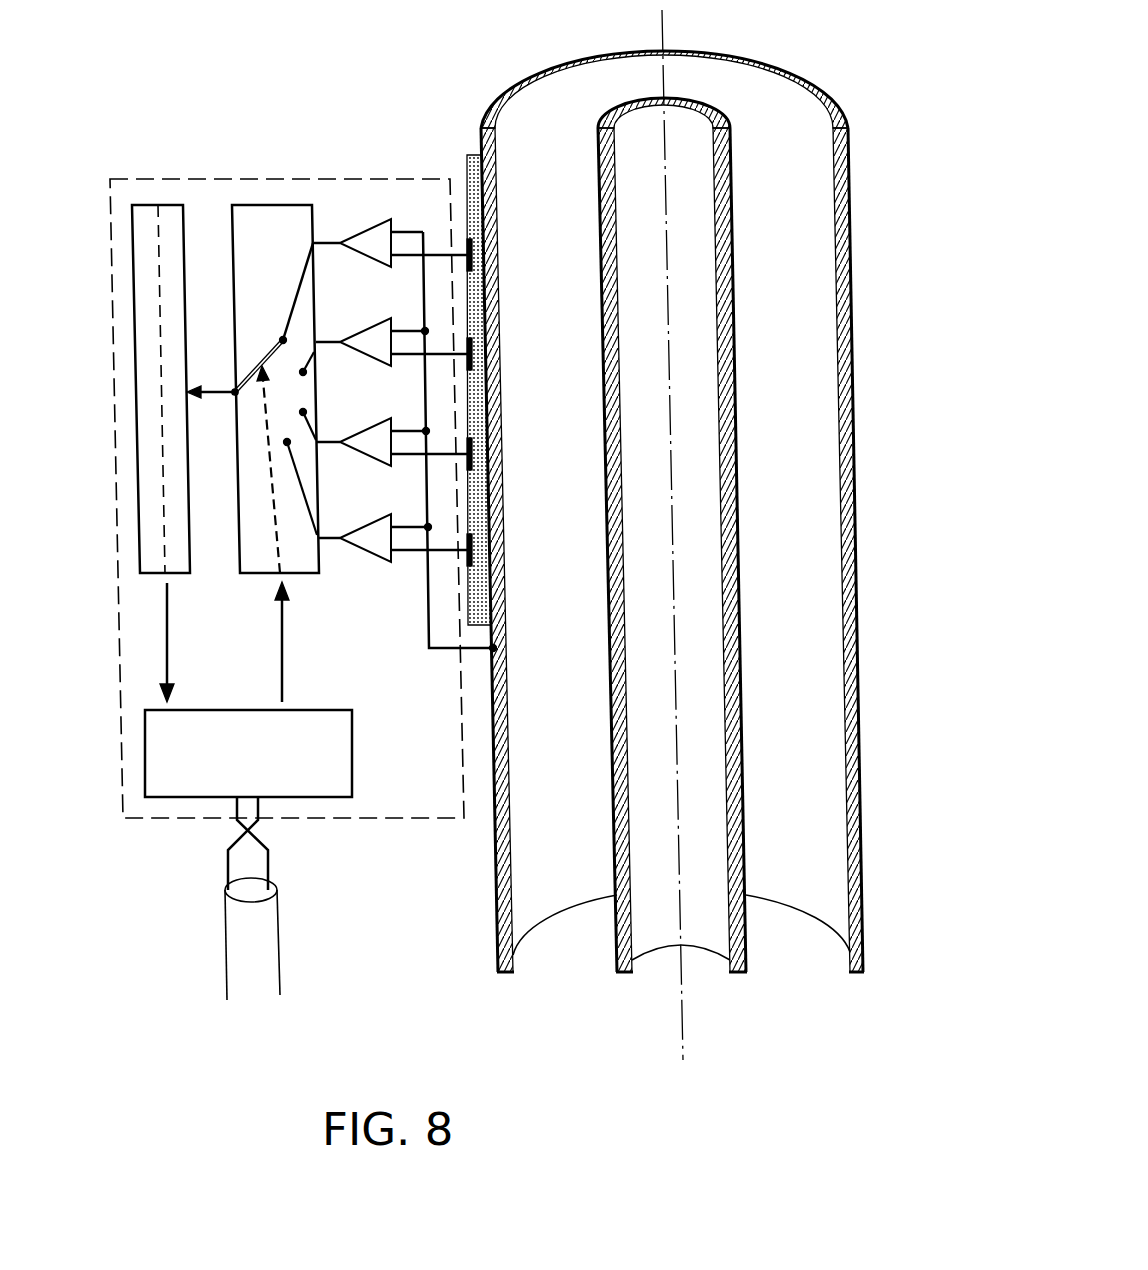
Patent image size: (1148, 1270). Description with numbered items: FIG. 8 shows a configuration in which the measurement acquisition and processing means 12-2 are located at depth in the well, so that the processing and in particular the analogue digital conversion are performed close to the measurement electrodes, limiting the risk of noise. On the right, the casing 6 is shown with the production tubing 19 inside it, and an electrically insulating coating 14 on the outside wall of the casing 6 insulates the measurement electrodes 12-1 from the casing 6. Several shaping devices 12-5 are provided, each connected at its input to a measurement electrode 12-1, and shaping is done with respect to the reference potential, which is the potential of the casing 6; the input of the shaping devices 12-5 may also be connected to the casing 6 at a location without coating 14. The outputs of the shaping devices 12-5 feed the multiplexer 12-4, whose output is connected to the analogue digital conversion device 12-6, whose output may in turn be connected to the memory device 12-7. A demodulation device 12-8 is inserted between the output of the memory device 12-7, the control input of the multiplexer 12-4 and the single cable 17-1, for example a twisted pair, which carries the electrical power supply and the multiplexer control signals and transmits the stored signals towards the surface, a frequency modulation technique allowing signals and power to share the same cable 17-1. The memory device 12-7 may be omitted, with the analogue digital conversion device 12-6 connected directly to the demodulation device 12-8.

The casing 6 is at (818, 83).
The production tubing 19 is at (627, 100).
The electrically insulating coating 14 is at (467, 157).
The measurement electrodes 12-1 is at (468, 556).
The measurement acquisition and processing means 12-2 is at (185, 178).
The multiplexer 12-4 is at (272, 222).
The shaping devices 12-5 is at (357, 237).
The analogue digital conversion device 12-6 is at (178, 545).
The memory device 12-7 is at (148, 560).
The demodulation device 12-8 is at (183, 787).
The cable 17-1 is at (270, 868).